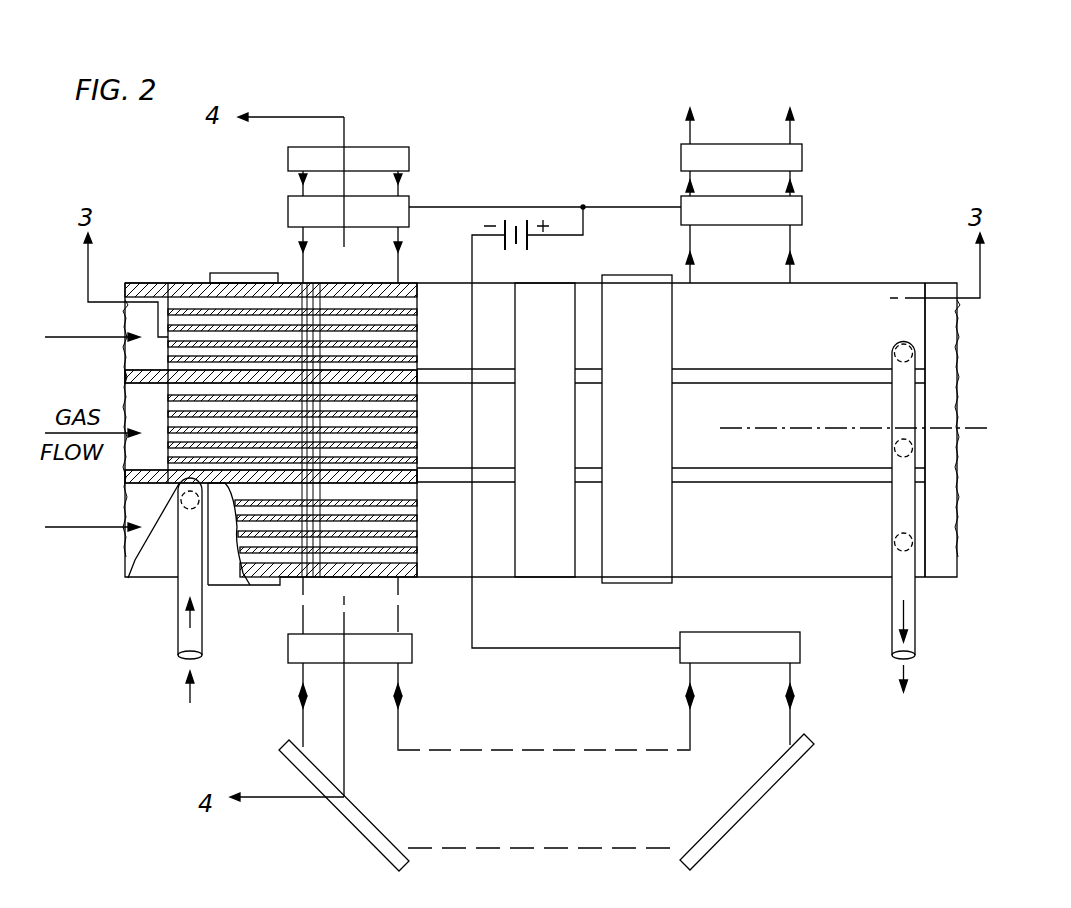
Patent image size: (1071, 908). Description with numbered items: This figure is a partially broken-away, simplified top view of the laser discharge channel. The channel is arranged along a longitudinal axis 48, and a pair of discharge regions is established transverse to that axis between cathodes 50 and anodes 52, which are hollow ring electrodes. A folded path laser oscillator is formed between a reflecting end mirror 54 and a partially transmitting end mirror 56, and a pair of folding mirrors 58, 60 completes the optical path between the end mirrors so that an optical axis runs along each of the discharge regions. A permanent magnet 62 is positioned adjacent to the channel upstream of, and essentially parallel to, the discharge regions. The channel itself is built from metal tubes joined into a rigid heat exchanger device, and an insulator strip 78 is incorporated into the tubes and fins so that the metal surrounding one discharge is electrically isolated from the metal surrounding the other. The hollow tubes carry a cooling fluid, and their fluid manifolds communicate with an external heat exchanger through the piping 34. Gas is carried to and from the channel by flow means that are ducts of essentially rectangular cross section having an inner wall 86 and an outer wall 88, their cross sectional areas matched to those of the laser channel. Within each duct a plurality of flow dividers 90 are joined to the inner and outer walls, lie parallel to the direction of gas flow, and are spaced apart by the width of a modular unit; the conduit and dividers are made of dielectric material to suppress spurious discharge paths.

The piping 34 is at (185, 622).
The longitudinal axis 48 is at (957, 428).
The cathodes 50 is at (406, 637).
The anodes 52 is at (408, 202).
The reflecting end mirror 54 is at (400, 150).
The partially transmitting end mirror 56 is at (802, 153).
The folding mirror 58 is at (372, 838).
The folding mirror 60 is at (714, 849).
The permanent magnet 62 is at (638, 431).
The insulator strip 78 is at (548, 431).
The inner wall 86 is at (140, 360).
The outer wall 88 is at (940, 328).
The flow dividers 90 is at (130, 478).